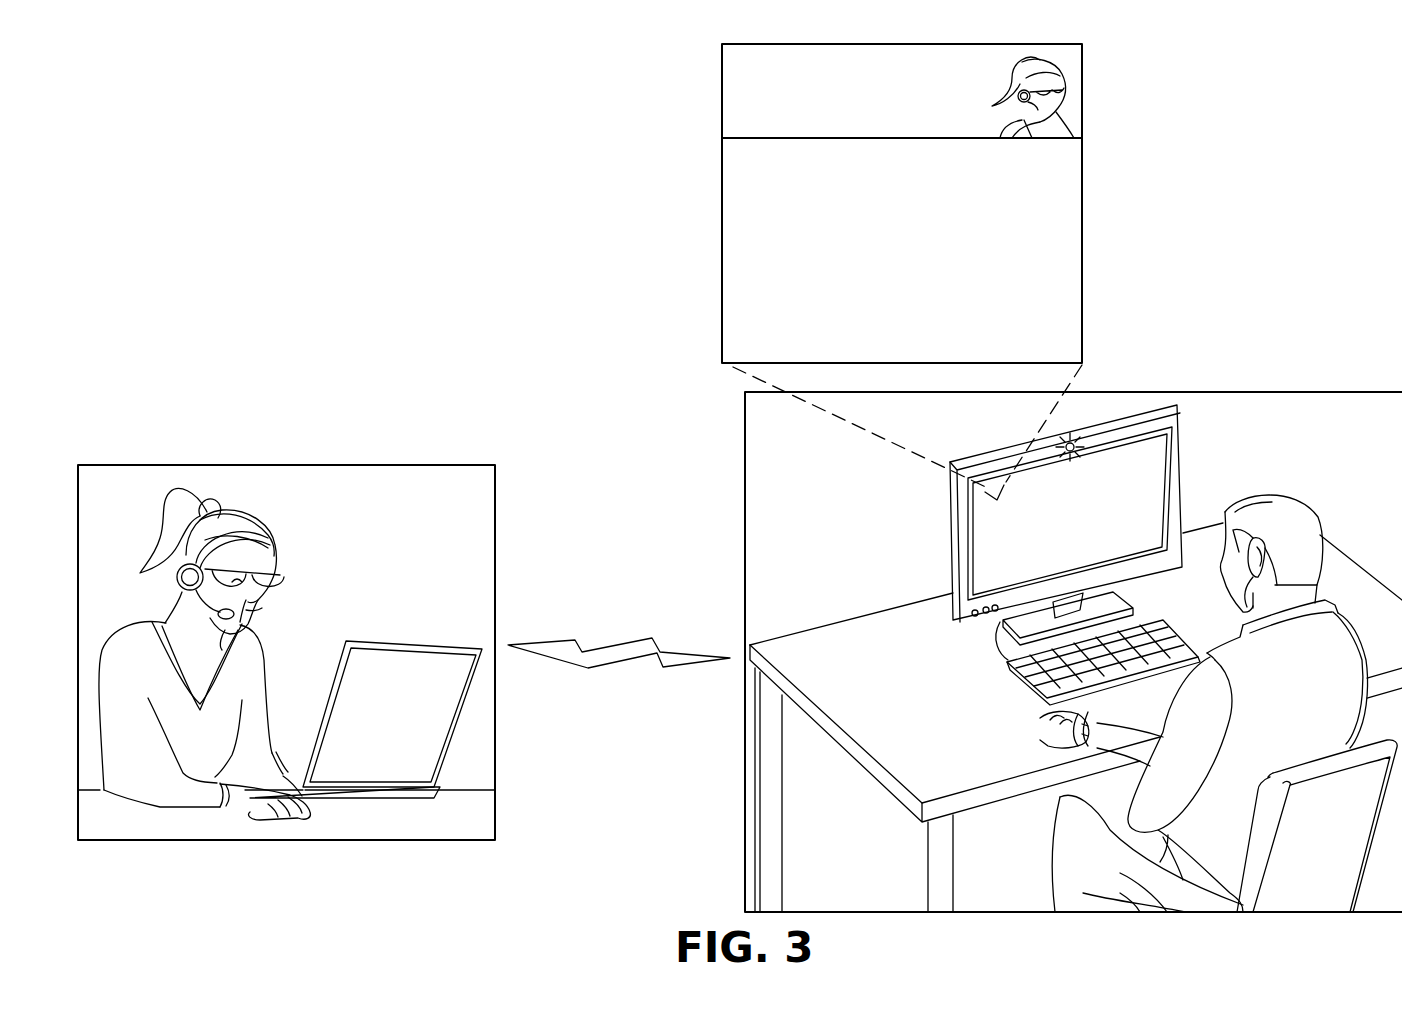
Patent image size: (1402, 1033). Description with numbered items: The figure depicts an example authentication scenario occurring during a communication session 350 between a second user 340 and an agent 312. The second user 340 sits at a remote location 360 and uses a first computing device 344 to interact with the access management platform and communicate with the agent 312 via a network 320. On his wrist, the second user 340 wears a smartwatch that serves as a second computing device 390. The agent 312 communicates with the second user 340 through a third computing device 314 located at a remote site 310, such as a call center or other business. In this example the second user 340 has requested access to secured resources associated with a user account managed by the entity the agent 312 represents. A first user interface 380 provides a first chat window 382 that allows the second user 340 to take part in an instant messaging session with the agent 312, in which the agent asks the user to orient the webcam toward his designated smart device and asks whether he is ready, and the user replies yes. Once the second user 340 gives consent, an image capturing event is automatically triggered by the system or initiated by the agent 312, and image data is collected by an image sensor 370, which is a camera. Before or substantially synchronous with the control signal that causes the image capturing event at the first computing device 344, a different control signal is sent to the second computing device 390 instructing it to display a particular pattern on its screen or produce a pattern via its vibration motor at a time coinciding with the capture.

The communication session 350 is at (312, 148).
The remote site 310 is at (282, 465).
The agent 312 is at (286, 558).
The third computing device 314 is at (420, 646).
The network 320 is at (620, 640).
The remote location 360 is at (1350, 392).
The second user 340 is at (1282, 485).
The first computing device 344 is at (950, 533).
The image sensor 370 is at (1076, 442).
The first user interface 380 is at (714, 44).
The first chat window 382 is at (1088, 138).
The second computing device 390 is at (1028, 752).